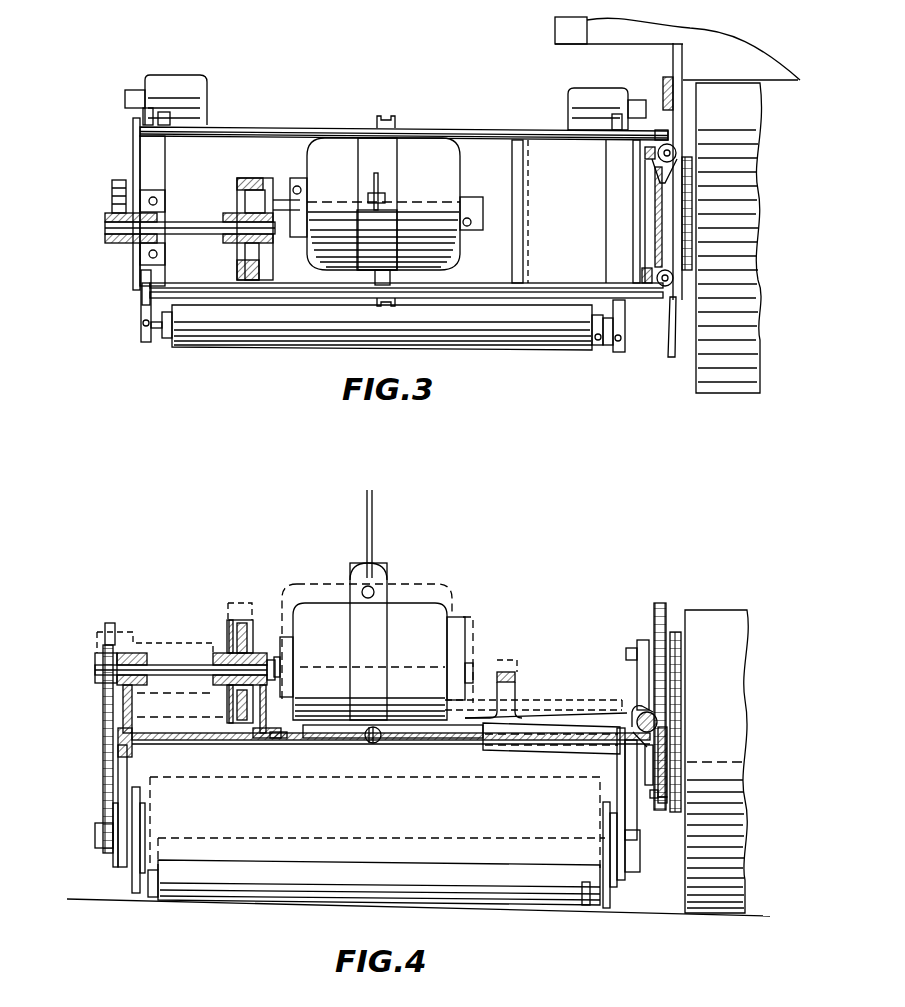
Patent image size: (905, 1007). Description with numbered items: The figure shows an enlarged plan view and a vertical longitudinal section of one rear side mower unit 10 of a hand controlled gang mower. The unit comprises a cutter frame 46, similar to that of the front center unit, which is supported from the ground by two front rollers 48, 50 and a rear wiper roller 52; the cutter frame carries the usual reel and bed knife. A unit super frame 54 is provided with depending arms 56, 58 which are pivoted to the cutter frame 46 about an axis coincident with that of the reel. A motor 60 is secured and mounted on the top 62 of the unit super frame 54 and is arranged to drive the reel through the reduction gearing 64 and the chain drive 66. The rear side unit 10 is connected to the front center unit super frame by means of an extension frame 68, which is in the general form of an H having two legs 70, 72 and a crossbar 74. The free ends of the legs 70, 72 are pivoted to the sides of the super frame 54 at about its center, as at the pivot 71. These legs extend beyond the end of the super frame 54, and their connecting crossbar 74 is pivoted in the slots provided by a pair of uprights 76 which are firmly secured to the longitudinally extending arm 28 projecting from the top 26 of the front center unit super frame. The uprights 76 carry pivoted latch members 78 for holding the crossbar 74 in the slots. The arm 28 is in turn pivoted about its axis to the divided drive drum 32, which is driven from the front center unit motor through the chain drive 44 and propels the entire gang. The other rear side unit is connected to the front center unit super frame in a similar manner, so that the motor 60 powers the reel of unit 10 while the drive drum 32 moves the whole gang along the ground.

In FIG. 3, the rear side mower unit 10 is at (229, 367).
In FIG. 4, the rear side mower unit 10 is at (238, 918).
In FIG. 3, the top of the front center unit super frame 26 is at (735, 58).
In FIG. 3, the longitudinally extending arm 28 is at (668, 345).
In FIG. 4, the longitudinally extending arm 28 is at (663, 803).
In FIG. 3, the divided drive drum 32 is at (712, 380).
In FIG. 4, the divided drive drum 32 is at (712, 905).
In FIG. 3, the chain drive 44 is at (696, 175).
In FIG. 4, the chain drive 44 is at (648, 607).
In FIG. 3, the cutter frame 46 is at (138, 282).
In FIG. 3, the front roller 48 is at (178, 82).
In FIG. 3, the front roller 50 is at (582, 95).
In FIG. 3, the rear wiper roller 52 is at (310, 337).
In FIG. 4, the rear wiper roller 52 is at (328, 890).
In FIG. 3, the unit super frame 54 is at (292, 128).
In FIG. 4, the unit super frame 54 is at (215, 745).
In FIG. 3, the depending arm 56 is at (142, 178).
In FIG. 4, the depending arm 56 is at (130, 768).
In FIG. 3, the depending arm 58 is at (632, 214).
In FIG. 4, the depending arm 58 is at (618, 778).
In FIG. 3, the motor 60 is at (455, 240).
In FIG. 4, the motor 60 is at (428, 628).
In FIG. 3, the top of the unit super frame 62 is at (230, 148).
In FIG. 4, the top of the unit super frame 62 is at (300, 742).
In FIG. 3, the reduction gearing 64 is at (228, 198).
In FIG. 4, the reduction gearing 64 is at (222, 700).
In FIG. 3, the chain drive 66 is at (115, 178).
In FIG. 4, the chain drive 66 is at (100, 750).
In FIG. 3, the extension frame 68 is at (627, 303).
In FIG. 4, the extension frame 68 is at (582, 706).
In FIG. 3, the leg 70 is at (495, 128).
In FIG. 4, the leg 70 is at (545, 716).
In FIG. 3, the pivot 71 is at (395, 116).
In FIG. 4, the pivot 71 is at (371, 745).
In FIG. 3, the leg 72 is at (565, 283).
In FIG. 4, the leg 72 is at (448, 738).
In FIG. 3, the crossbar 74 is at (660, 218).
In FIG. 4, the crossbar 74 is at (658, 720).
In FIG. 3, the upright 76 is at (641, 150).
In FIG. 4, the upright 76 is at (650, 792).
In FIG. 3, the pivoted latch member 78 is at (676, 160).
In FIG. 4, the pivoted latch member 78 is at (660, 712).